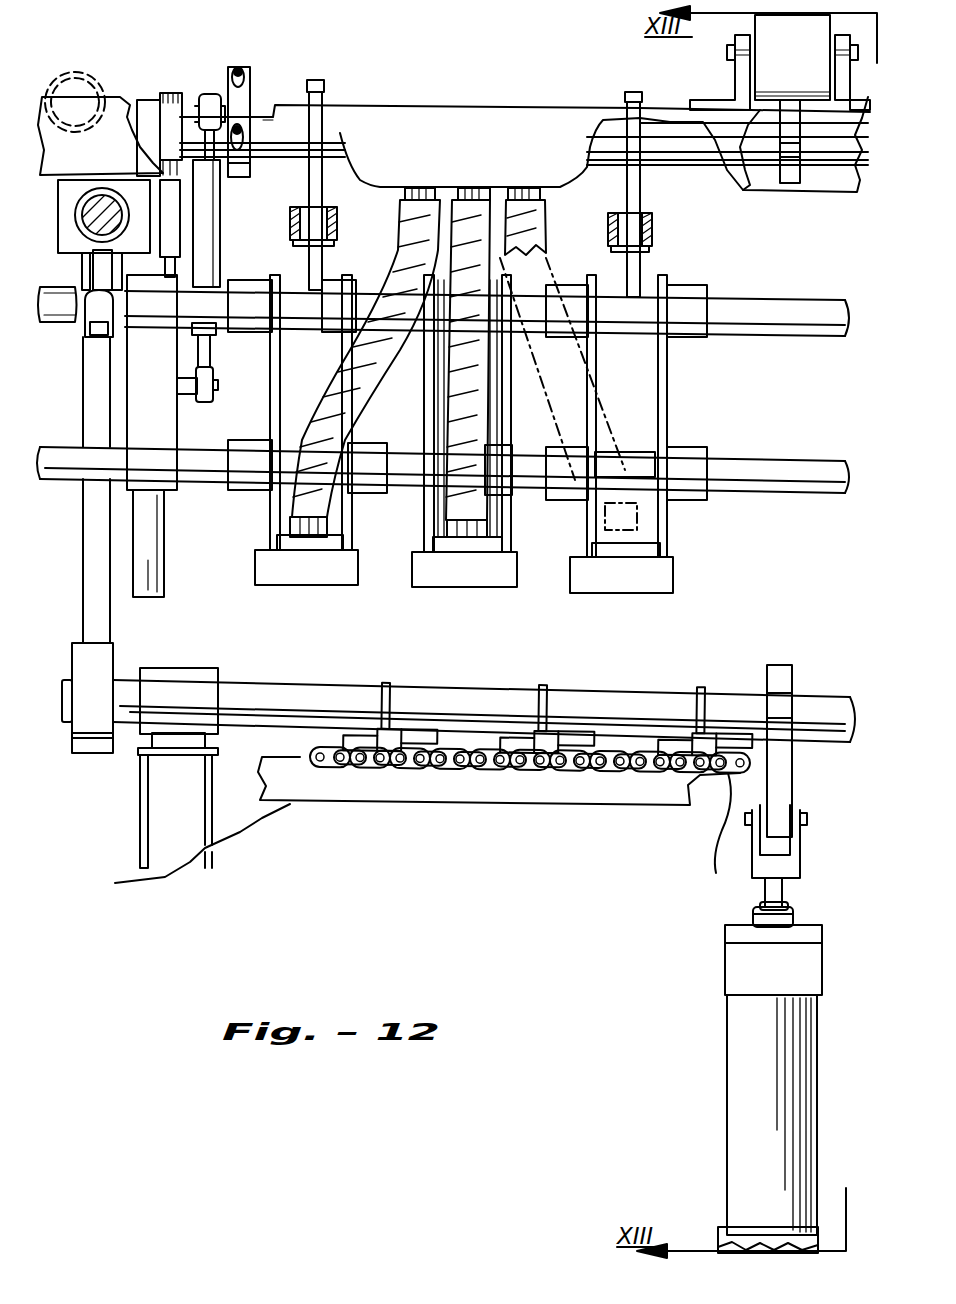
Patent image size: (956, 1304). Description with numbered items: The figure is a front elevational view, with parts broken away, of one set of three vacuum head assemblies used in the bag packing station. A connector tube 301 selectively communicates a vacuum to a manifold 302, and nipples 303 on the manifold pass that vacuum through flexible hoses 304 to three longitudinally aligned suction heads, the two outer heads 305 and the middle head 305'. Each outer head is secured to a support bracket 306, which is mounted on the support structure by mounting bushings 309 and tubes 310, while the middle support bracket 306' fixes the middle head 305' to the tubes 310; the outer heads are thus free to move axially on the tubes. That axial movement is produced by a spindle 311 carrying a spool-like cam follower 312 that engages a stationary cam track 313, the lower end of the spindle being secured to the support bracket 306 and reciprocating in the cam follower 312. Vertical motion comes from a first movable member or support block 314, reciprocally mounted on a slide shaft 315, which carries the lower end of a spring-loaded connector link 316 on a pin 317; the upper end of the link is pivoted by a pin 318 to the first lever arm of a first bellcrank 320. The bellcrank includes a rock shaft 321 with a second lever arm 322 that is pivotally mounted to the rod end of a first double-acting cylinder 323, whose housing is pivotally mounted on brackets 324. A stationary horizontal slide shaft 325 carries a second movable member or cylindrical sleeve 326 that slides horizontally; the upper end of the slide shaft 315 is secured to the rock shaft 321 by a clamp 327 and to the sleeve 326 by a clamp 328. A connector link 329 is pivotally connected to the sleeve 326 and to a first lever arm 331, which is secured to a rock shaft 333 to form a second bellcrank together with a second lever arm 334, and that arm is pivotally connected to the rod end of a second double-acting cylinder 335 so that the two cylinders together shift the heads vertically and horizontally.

The connector tube 301 is at (70, 80).
The manifold 302 is at (407, 134).
The nipples 303 is at (520, 193).
The flexible hoses 304 is at (457, 385).
The vacuum head 305 is at (464, 434).
The vacuum head 305' is at (464, 569).
The support bracket 306 is at (311, 412).
The middle support bracket 306' is at (498, 413).
The mounting bushings 309 is at (683, 460).
The tubes 310 is at (56, 313).
The spindle 311 is at (317, 88).
The cam follower 312 is at (303, 213).
The cam track 313 is at (293, 223).
The support block 314 is at (167, 430).
The slide shaft 315 is at (150, 593).
The spring-loaded connector link 316 is at (205, 223).
The pin 317 is at (218, 384).
The pin 318 is at (198, 108).
The first bellcrank 320 is at (259, 68).
The rock shaft 321 is at (263, 120).
The second lever arm 322 is at (787, 180).
The first double-acting cylinder 323 is at (812, 65).
The brackets 324 is at (740, 77).
The slide shaft 325 is at (85, 213).
The cylindrical sleeve 326 is at (74, 226).
The clamp 327 is at (142, 117).
The clamp 328 is at (173, 250).
The connector link 329 is at (92, 315).
The first lever arm 331 is at (102, 620).
The rock shaft 333 is at (497, 673).
The second lever arm 334 is at (780, 785).
The second double-acting cylinder 335 is at (730, 1027).